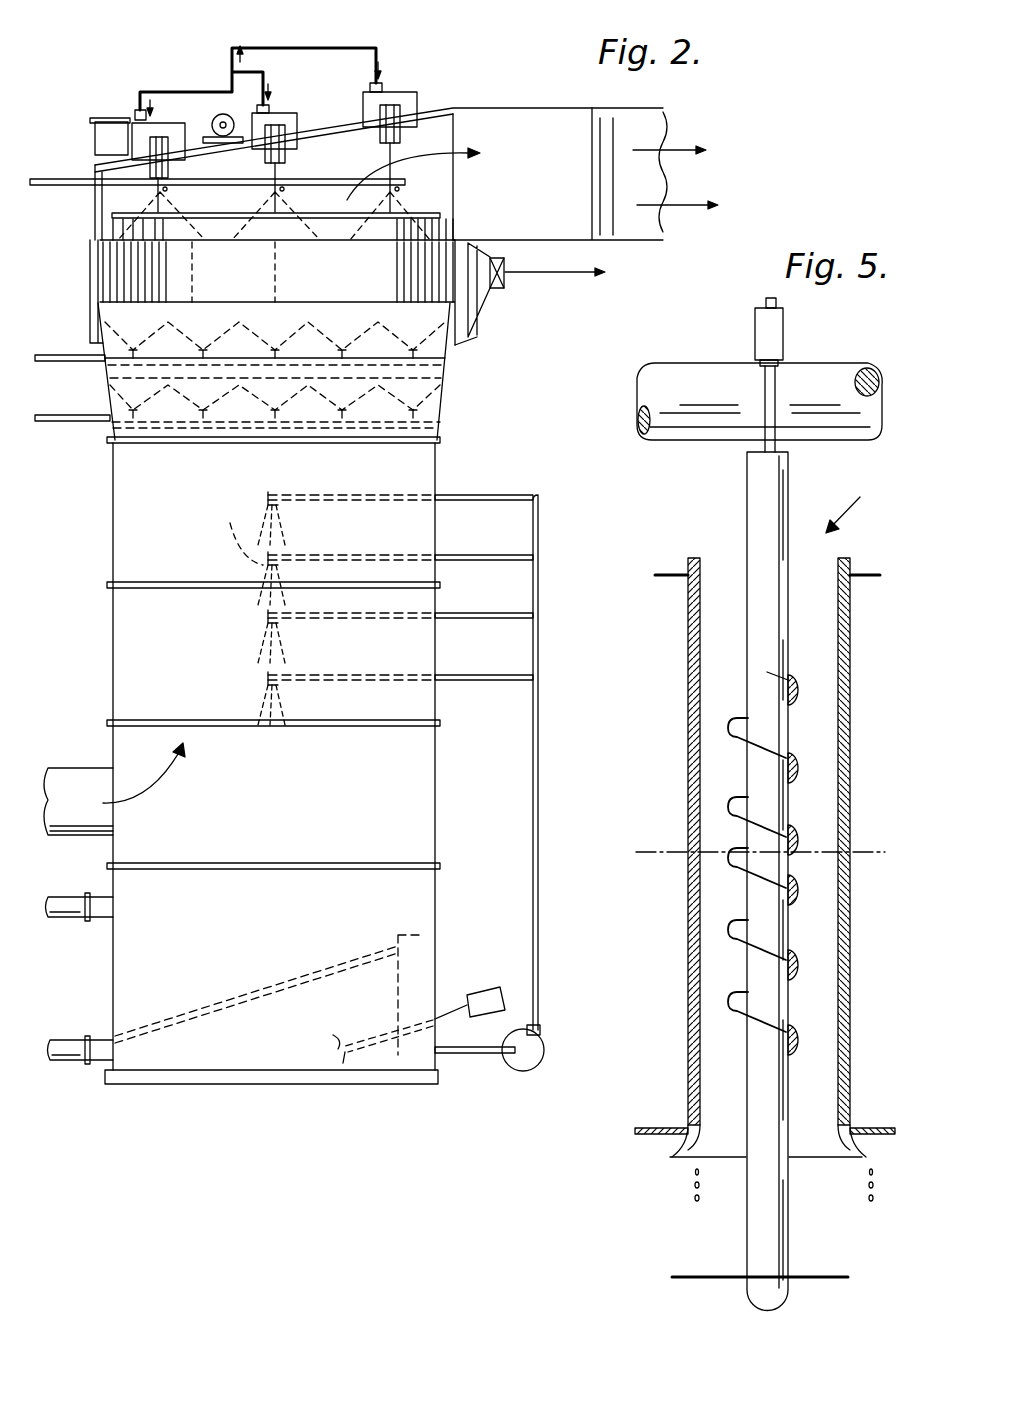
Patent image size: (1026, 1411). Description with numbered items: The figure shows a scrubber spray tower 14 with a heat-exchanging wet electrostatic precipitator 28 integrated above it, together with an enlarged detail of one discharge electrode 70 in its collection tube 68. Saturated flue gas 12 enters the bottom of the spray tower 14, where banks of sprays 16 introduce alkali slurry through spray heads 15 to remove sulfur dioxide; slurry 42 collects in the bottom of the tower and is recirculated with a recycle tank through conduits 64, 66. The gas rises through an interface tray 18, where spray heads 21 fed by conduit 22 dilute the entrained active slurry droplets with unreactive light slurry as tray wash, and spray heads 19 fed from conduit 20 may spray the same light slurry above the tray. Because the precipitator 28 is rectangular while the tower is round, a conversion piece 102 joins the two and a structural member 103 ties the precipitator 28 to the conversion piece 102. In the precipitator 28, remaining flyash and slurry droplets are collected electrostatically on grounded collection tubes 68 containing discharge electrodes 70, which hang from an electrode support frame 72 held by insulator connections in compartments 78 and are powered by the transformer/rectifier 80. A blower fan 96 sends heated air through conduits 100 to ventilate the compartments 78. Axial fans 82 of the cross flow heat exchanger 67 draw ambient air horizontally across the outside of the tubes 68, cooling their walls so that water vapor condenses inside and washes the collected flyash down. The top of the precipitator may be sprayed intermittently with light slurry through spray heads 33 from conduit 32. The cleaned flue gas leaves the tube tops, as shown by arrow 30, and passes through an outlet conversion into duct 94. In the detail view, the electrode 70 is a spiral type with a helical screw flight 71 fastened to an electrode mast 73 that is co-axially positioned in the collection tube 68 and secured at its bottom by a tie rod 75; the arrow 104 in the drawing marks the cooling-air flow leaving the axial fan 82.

In FIG. 2, the saturated flue gas 12 is at (157, 793).
In FIG. 2, the scrubber spray tower 14 is at (437, 473).
In FIG. 2, the spray heads 15 is at (263, 503).
In FIG. 2, the sprays 16 is at (478, 503).
In FIG. 2, the interface tray 18 is at (420, 373).
In FIG. 2, the spray heads 19 is at (275, 356).
In FIG. 2, the conduit 20 is at (60, 368).
In FIG. 2, the spray heads 21 is at (205, 416).
In FIG. 2, the conduit 22 is at (63, 423).
In FIG. 2, the wet electrostatic precipitator 28 is at (92, 283).
In FIG. 2, the flue gas exit arrow 30 is at (470, 160).
In FIG. 2, the conduit 32 is at (53, 175).
In FIG. 2, the spray heads 33 is at (167, 188).
In FIG. 2, the slurry 42 is at (215, 1047).
In FIG. 2, the conduit 64 is at (70, 917).
In FIG. 2, the conduit 66 is at (67, 1057).
In FIG. 2, the cross flow heat exchanger 67 is at (477, 300).
In FIG. 2, the collection tube 68 is at (175, 285).
In FIG. 5, the collection tube 68 is at (850, 723).
In FIG. 2, the discharge electrode 70 is at (167, 225).
In FIG. 5, the discharge electrode 70 is at (824, 415).
In FIG. 5, the screw flight 71 is at (720, 760).
In FIG. 5, the electrode support frame 72 is at (823, 363).
In FIG. 5, the electrode mast 73 is at (763, 507).
In FIG. 5, the tie rod 75 is at (707, 1272).
In FIG. 2, the insulator compartment 78 is at (413, 98).
In FIG. 2, the transformer/rectifier 80 is at (100, 115).
In FIG. 2, the axial fan 82 is at (498, 290).
In FIG. 2, the duct 94 is at (643, 124).
In FIG. 2, the blower fan 96 is at (213, 120).
In FIG. 2, the conduits 100 is at (245, 47).
In FIG. 2, the conversion piece 102 is at (435, 409).
In FIG. 2, the structural member 103 is at (467, 337).
In FIG. 2, the air flow 104 is at (547, 277).